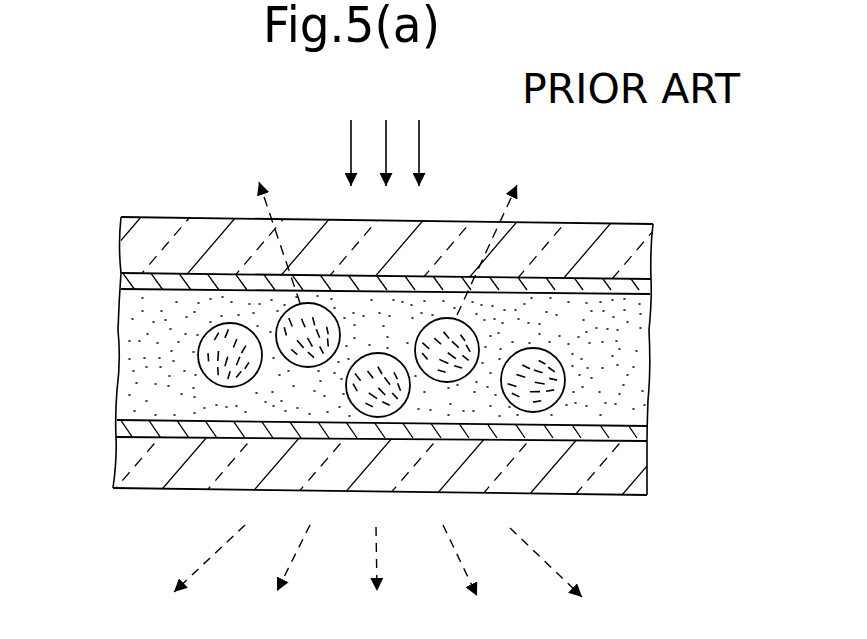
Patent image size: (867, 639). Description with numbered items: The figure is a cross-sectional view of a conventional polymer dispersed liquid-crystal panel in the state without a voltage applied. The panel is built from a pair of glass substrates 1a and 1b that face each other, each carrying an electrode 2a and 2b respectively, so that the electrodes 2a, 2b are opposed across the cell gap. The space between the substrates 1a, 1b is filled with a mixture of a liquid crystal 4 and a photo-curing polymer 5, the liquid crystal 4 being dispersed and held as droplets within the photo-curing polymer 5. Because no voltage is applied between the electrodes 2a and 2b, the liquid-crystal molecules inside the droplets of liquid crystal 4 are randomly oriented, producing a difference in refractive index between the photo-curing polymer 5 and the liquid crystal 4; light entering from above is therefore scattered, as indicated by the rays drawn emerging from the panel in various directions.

The glass substrate 1a is at (643, 256).
The glass substrate 1b is at (632, 472).
The electrode 2a is at (647, 284).
The electrode 2b is at (647, 431).
The liquid crystal 4 is at (567, 375).
The photo-curing polymer 5 is at (143, 402).